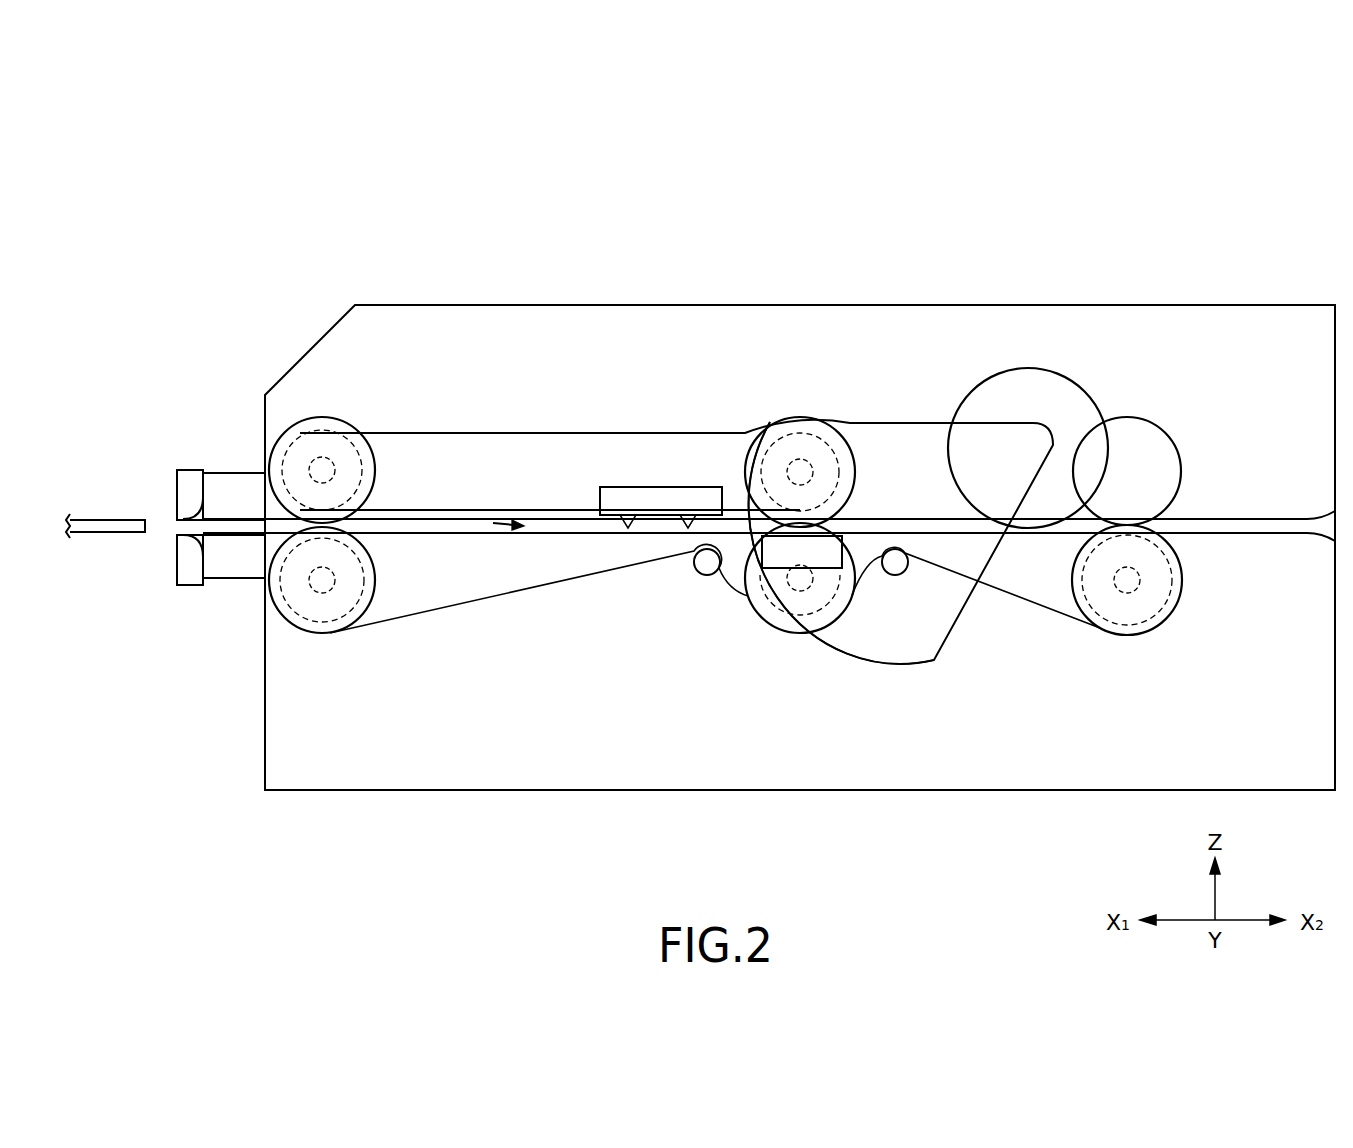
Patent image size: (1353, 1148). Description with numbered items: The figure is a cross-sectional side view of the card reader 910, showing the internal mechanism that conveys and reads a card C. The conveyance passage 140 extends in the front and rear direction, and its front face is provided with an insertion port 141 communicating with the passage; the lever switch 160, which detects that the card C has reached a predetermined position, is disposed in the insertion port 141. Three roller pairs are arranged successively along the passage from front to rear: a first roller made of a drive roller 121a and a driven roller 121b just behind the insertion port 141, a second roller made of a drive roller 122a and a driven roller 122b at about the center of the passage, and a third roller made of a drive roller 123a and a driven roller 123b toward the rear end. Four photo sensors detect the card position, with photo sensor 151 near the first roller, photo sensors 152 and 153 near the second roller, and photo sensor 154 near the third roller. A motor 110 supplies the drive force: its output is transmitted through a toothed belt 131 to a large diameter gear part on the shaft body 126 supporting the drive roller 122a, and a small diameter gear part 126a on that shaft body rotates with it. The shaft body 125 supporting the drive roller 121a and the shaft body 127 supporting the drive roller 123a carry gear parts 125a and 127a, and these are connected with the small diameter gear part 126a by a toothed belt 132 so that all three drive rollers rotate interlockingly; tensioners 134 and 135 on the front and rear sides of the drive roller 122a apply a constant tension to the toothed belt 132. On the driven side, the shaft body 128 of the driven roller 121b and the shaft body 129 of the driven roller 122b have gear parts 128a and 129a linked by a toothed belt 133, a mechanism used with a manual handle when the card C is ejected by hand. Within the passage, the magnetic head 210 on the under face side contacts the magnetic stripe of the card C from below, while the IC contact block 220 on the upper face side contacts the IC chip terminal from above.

The card reader 910 is at (113, 70).
The lever switch 160 is at (210, 195).
The photo sensor 151 is at (408, 195).
The photo sensor 152 is at (745, 195).
The photo sensor 153 is at (800, 195).
The photo sensor 154 is at (1147, 195).
The motor 110 is at (1062, 378).
The drive roller 121a is at (312, 634).
The driven roller 121b is at (335, 418).
The drive roller 122a is at (820, 630).
The driven roller 122b is at (855, 450).
The drive roller 123a is at (1140, 636).
The driven roller 123b is at (1140, 418).
The shaft body 125 is at (350, 568).
The gear part 125a is at (337, 584).
The shaft body 126 is at (830, 604).
The small diameter gear part 126a is at (802, 600).
The shaft body 127 is at (1135, 575).
The gear part 127a is at (1175, 606).
The shaft body 128 is at (345, 461).
The gear part 128a is at (335, 480).
The shaft body 129 is at (808, 440).
The gear part 129a is at (764, 428).
The toothed belt 131 is at (668, 676).
The toothed belt 132 is at (490, 598).
The toothed belt 133 is at (575, 432).
The tensioner 134 is at (705, 578).
The tensioner 135 is at (898, 578).
The conveyance passage 140 is at (489, 518).
The insertion port 141 is at (226, 586).
The magnetic head 210 is at (780, 597).
The IC contact block 220 is at (630, 487).
The card C is at (104, 533).